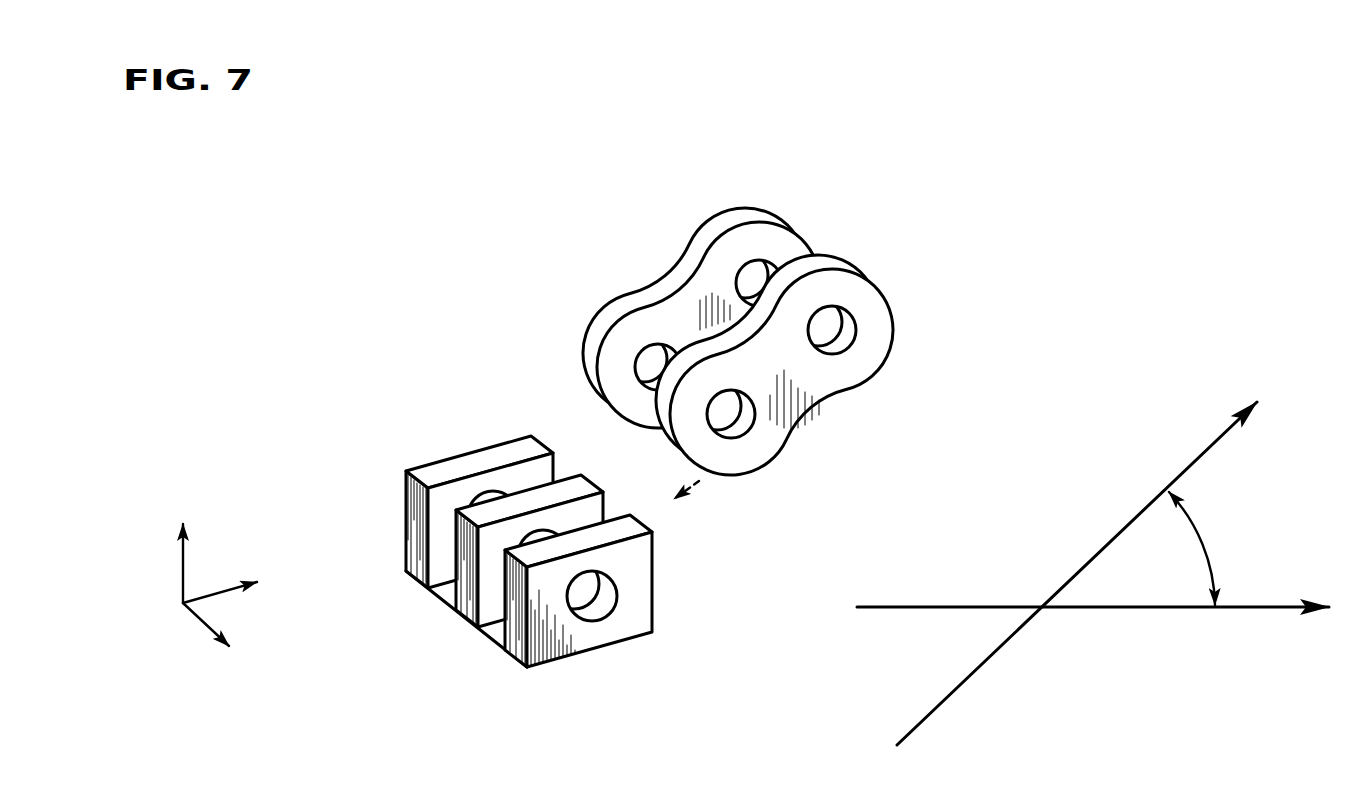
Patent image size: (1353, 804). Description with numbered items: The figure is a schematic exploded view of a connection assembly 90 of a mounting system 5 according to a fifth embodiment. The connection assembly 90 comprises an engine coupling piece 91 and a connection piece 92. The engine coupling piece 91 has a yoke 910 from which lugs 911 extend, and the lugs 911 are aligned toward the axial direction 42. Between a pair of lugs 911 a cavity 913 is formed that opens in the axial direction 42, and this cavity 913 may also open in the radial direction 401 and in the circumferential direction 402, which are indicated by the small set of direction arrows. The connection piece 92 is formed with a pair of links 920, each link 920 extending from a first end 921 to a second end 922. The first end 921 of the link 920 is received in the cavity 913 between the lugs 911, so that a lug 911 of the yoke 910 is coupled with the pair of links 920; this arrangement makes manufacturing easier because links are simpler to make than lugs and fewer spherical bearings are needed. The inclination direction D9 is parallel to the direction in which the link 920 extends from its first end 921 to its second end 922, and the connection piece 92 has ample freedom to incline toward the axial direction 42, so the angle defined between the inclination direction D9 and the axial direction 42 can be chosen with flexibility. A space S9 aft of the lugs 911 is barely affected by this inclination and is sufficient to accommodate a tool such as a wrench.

The mounting system 5 is at (638, 128).
The connection piece 92 is at (658, 243).
The link 920 is at (816, 408).
The second end 922 is at (806, 250).
The first end 921 is at (725, 455).
The connection assembly 90 is at (485, 338).
The engine coupling piece 91 is at (387, 710).
The yoke 910 is at (497, 631).
The lug 911 is at (421, 552).
The cavity 913 is at (561, 478).
The space S9 is at (818, 428).
The inclination direction D9 is at (1195, 458).
The axial direction 42 is at (215, 590).
The radial direction 401 is at (181, 562).
The circumferential direction 402 is at (199, 623).